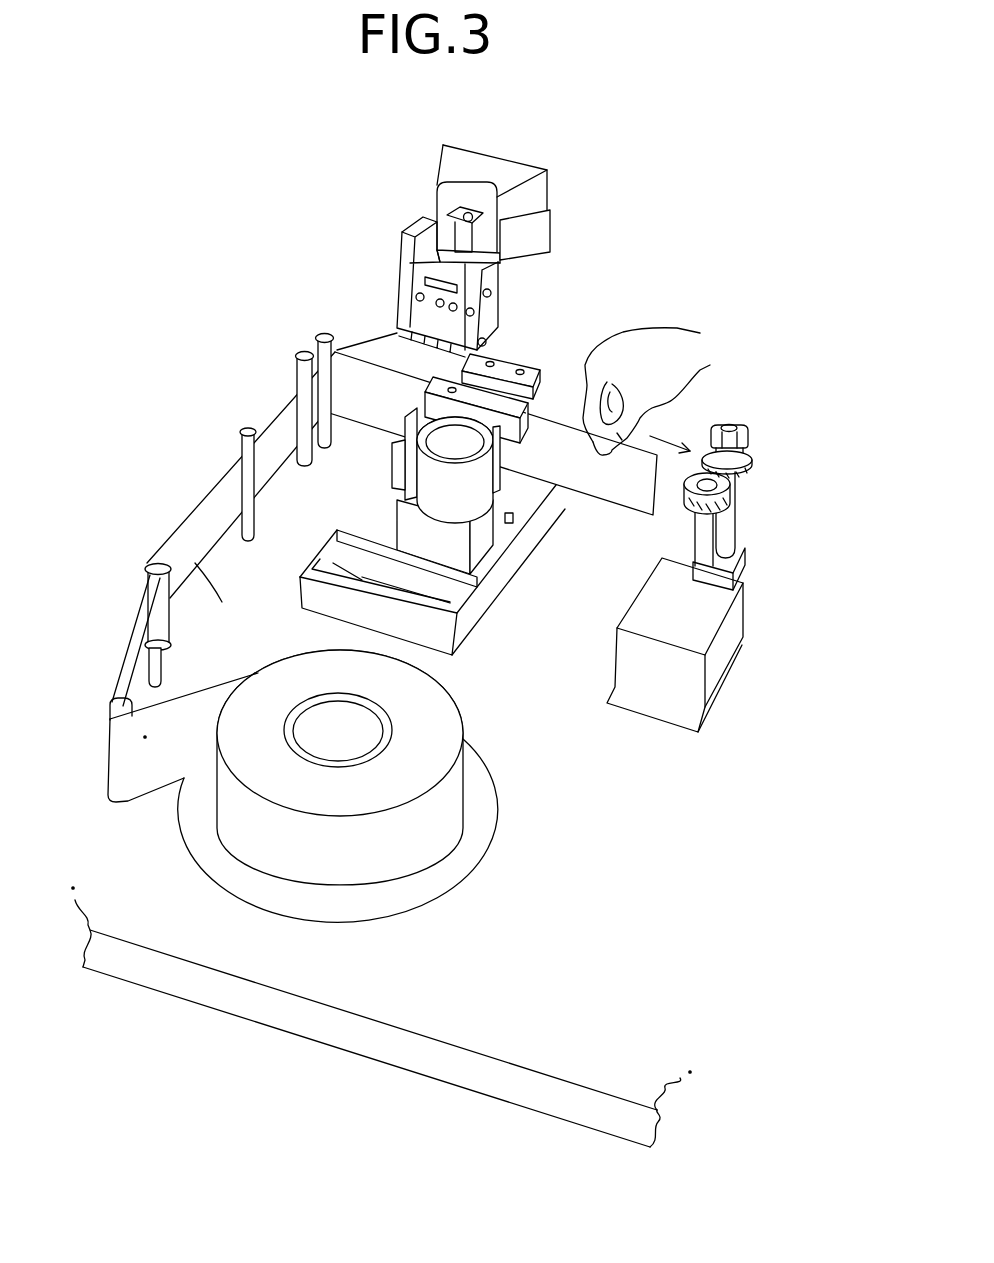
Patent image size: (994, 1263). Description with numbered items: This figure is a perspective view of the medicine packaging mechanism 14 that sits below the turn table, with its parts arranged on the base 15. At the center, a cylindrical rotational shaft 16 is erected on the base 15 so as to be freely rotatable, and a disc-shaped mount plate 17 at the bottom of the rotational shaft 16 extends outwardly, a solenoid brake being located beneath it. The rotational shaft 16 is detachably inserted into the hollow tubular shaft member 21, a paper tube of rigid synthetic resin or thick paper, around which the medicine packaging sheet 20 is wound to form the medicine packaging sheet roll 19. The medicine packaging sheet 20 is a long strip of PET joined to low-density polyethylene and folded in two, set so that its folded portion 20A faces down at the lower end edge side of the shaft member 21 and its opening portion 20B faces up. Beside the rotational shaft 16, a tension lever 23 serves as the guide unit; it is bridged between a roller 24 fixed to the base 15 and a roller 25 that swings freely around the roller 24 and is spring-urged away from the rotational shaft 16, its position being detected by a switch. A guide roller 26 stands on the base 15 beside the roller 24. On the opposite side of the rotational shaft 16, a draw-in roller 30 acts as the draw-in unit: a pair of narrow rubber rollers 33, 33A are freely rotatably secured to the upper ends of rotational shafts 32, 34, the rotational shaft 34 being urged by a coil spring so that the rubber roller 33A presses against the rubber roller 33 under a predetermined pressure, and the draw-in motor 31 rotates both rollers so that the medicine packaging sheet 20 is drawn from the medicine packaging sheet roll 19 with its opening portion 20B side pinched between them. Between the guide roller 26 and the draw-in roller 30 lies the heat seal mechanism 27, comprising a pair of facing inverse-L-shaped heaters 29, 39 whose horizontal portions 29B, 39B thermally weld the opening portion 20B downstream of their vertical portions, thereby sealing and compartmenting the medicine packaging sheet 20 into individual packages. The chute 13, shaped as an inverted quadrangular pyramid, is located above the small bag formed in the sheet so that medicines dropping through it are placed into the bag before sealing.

The chute 13 is at (540, 237).
The medicine packaging mechanism 14 is at (303, 260).
The base 15 is at (407, 1010).
The rotational shaft 16 is at (337, 747).
The mount plate 17 is at (472, 855).
The medicine packaging sheet roll 19 is at (470, 727).
The medicine packaging sheet 20 is at (120, 772).
The folded portion 20A is at (248, 523).
The opening portion 20B is at (182, 532).
The shaft member 21 is at (393, 729).
The tension lever 23 is at (140, 637).
The roller 24 is at (160, 608).
The roller 25 is at (115, 713).
The guide roller 26 is at (246, 427).
The heat seal mechanism 27 is at (505, 332).
The heater 29 is at (518, 350).
The horizontal portion 29B is at (585, 365).
The draw-in roller 30 is at (727, 564).
The draw-in motor 31 is at (747, 570).
The rotational shaft 32 is at (705, 553).
The rubber roller 33 is at (737, 503).
The rubber roller 33A is at (753, 460).
The rotational shaft 34 is at (727, 523).
The heater 39 is at (440, 388).
The horizontal portion 39B is at (522, 428).